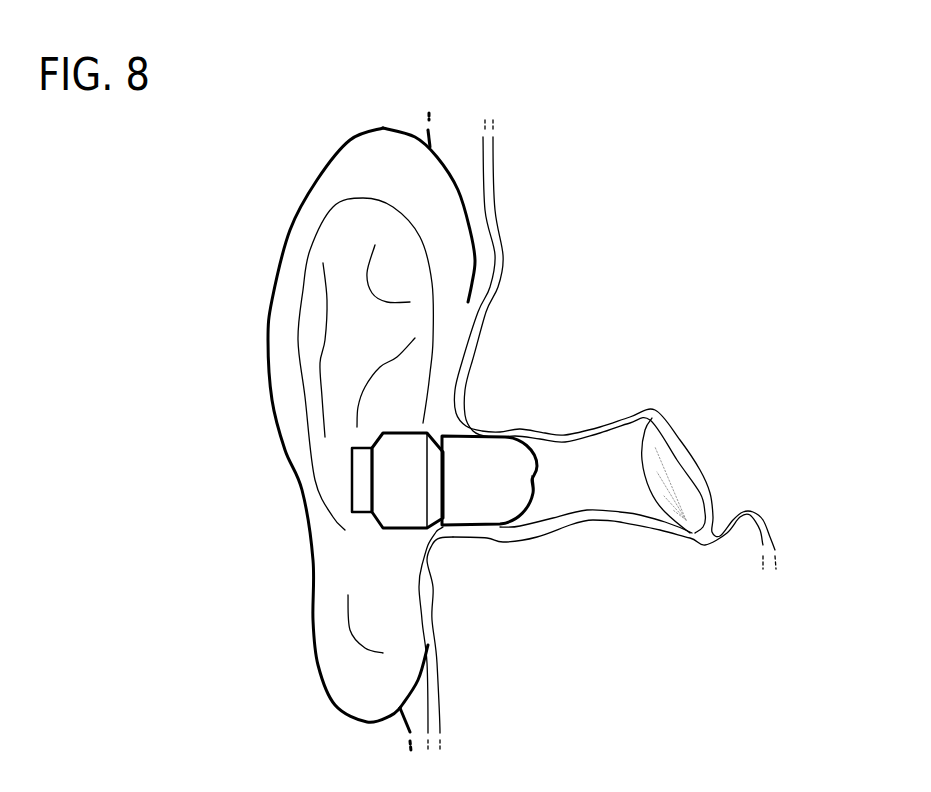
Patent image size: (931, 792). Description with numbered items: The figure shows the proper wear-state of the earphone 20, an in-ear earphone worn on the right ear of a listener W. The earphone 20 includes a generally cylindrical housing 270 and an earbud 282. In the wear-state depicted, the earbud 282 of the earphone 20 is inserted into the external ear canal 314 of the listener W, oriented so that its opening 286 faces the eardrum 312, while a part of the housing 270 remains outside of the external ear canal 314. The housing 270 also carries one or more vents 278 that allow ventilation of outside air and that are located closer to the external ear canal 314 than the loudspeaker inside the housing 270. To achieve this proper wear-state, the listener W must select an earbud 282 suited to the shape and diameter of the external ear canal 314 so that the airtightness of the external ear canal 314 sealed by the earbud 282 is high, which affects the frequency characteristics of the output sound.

The earphone 20 is at (390, 413).
The housing 270 is at (405, 503).
The vents 278 is at (415, 443).
The earbud 282 is at (488, 502).
The opening 286 is at (533, 478).
The eardrum 312 is at (657, 450).
The external ear canal 314 is at (587, 485).
The listener W is at (683, 130).